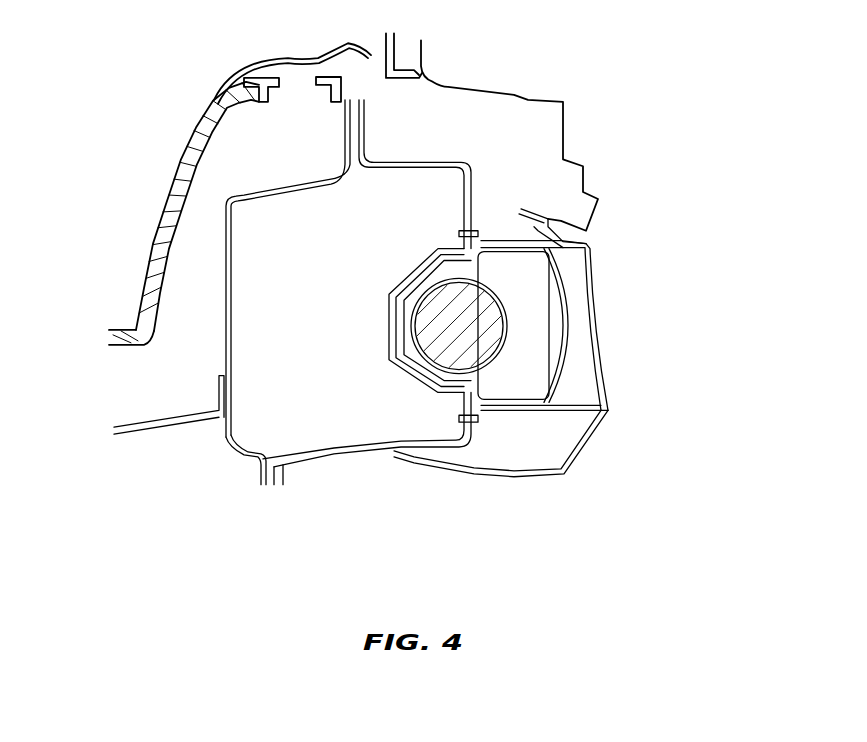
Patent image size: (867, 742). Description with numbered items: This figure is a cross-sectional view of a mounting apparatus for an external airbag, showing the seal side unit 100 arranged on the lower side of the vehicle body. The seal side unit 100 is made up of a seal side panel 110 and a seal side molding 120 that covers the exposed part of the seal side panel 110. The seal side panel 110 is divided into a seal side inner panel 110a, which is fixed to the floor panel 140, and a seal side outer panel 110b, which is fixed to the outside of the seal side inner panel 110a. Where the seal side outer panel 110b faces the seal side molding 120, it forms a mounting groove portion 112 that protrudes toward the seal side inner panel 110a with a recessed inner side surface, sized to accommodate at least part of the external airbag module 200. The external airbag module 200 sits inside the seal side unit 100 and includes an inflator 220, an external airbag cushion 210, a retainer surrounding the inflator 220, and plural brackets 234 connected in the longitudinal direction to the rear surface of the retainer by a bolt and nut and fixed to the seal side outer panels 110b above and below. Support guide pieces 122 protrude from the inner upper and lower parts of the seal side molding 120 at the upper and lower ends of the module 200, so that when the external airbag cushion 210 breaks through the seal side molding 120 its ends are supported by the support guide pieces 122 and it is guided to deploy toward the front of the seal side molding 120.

The seal side unit 100 is at (433, 502).
The seal side panel 110 is at (341, 345).
The seal side inner panel 110a is at (237, 456).
The seal side outer panel 110b is at (357, 456).
The mounting groove portion 112 is at (410, 315).
The seal side molding 120 is at (576, 461).
The support guide pieces 122 is at (560, 222).
The floor panel 140 is at (147, 437).
The external airbag module 200 is at (595, 326).
The external airbag cushion 210 is at (567, 288).
The inflator 220 is at (503, 353).
The brackets 234 is at (472, 232).